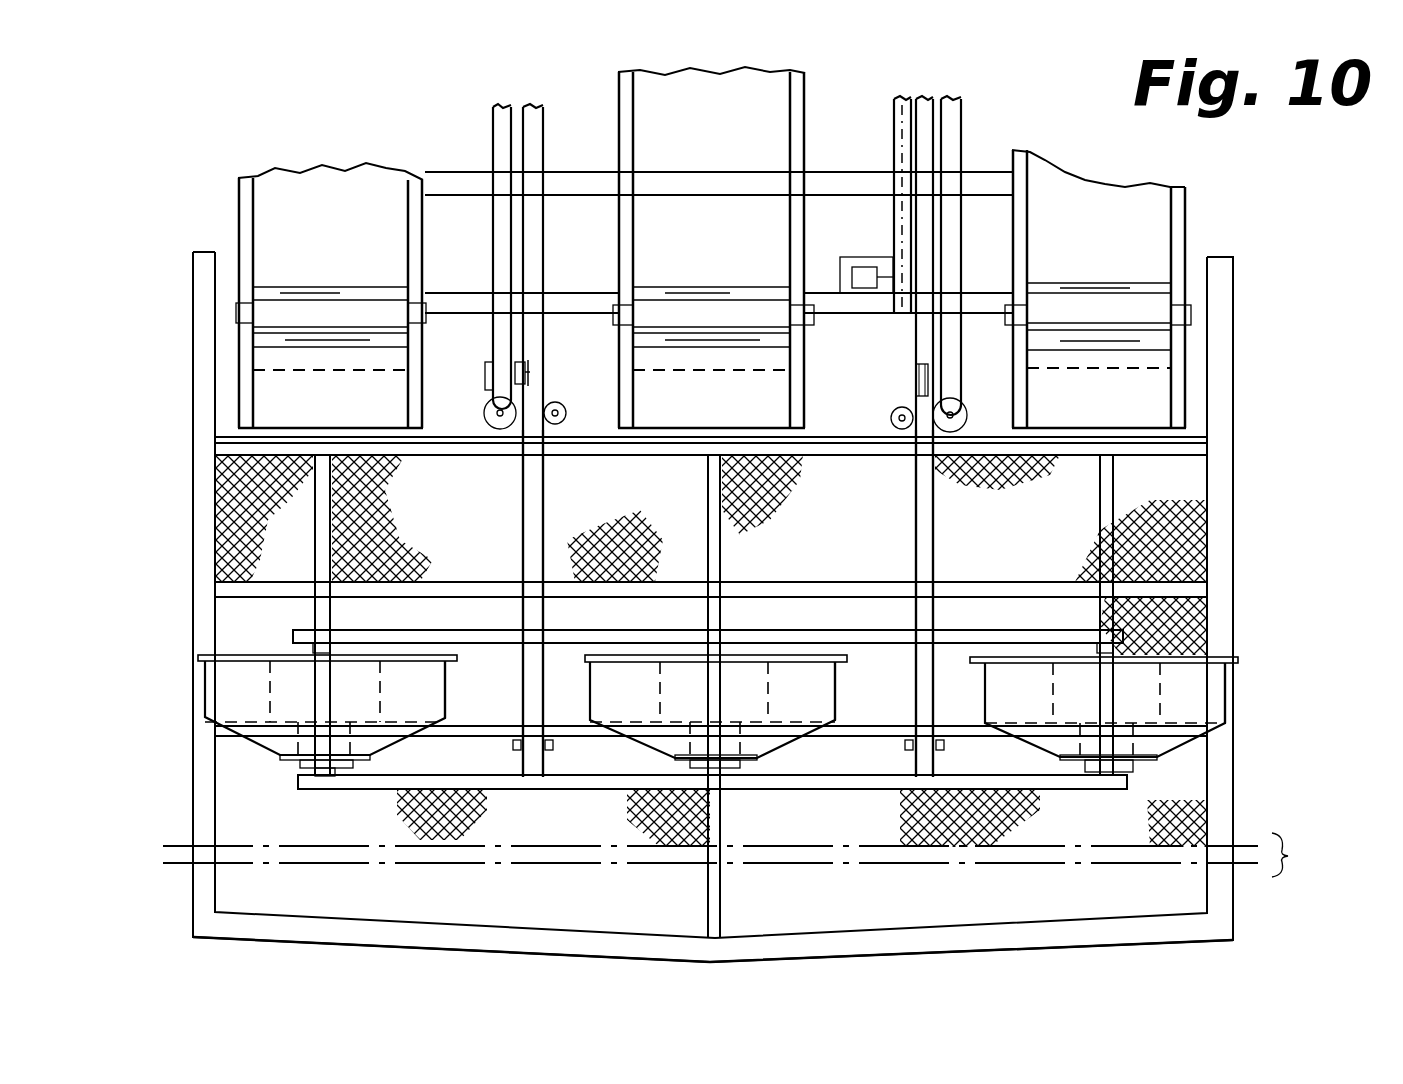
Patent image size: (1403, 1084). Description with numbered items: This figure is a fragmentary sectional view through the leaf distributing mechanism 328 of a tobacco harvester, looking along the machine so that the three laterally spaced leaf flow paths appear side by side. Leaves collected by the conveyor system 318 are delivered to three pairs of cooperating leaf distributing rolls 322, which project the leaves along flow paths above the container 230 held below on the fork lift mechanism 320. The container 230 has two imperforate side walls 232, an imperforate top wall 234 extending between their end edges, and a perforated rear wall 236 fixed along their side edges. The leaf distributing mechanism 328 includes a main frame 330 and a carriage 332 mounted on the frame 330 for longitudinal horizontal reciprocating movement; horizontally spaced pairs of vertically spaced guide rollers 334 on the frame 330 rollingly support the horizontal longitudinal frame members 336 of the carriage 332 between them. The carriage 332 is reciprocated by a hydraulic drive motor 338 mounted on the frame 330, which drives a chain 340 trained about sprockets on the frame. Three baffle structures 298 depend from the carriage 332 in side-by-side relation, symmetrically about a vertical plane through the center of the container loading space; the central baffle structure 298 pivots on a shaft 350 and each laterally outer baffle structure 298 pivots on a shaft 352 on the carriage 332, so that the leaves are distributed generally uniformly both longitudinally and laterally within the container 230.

The container 230 is at (1237, 757).
The side walls 232 is at (202, 548).
The top wall 234 is at (1050, 930).
The rear wall 236 is at (1180, 533).
The baffle structure 298 is at (448, 682).
The conveyor system 318 is at (428, 243).
The fork lift mechanism 320 is at (482, 340).
The leaf distributing rolls 322 is at (383, 297).
The leaf distributing mechanism 328 is at (190, 697).
The main frame 330 is at (493, 130).
The carriage 332 is at (553, 783).
The guide rollers 334 is at (537, 375).
The horizontal longitudinal frame members 336 is at (523, 512).
The hydraulic drive motor 338 is at (865, 277).
The chain 340 is at (893, 153).
The shaft 350 is at (710, 690).
The shaft 352 is at (320, 695).